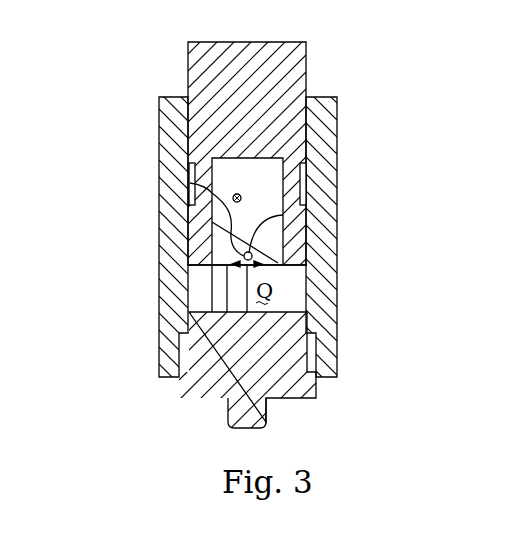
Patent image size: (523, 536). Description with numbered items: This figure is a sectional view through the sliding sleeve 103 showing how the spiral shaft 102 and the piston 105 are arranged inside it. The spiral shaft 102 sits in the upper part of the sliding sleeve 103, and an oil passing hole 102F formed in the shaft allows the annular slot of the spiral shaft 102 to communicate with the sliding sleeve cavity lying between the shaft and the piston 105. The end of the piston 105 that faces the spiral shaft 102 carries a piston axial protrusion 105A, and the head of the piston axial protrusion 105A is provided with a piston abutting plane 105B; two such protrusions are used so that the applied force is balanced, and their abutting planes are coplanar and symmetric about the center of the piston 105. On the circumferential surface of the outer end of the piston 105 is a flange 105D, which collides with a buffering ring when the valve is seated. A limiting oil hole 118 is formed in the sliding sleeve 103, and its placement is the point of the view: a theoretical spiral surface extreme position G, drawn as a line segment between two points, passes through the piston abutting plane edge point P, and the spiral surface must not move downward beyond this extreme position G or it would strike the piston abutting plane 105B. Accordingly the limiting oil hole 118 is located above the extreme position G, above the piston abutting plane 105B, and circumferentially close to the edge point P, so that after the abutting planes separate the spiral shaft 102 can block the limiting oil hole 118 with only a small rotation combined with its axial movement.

The spiral shaft 102 is at (307, 58).
The oil passing hole 102F is at (237, 197).
The sliding sleeve 103 is at (321, 121).
The piston 105 is at (300, 320).
The piston axial protrusion 105A is at (223, 297).
The piston abutting plane 105B is at (190, 183).
The flange 105D is at (316, 390).
The limiting oil hole 118 is at (283, 215).
The piston abutting plane edge point P is at (250, 259).
The theoretical spiral surface extreme position G is at (306, 265).